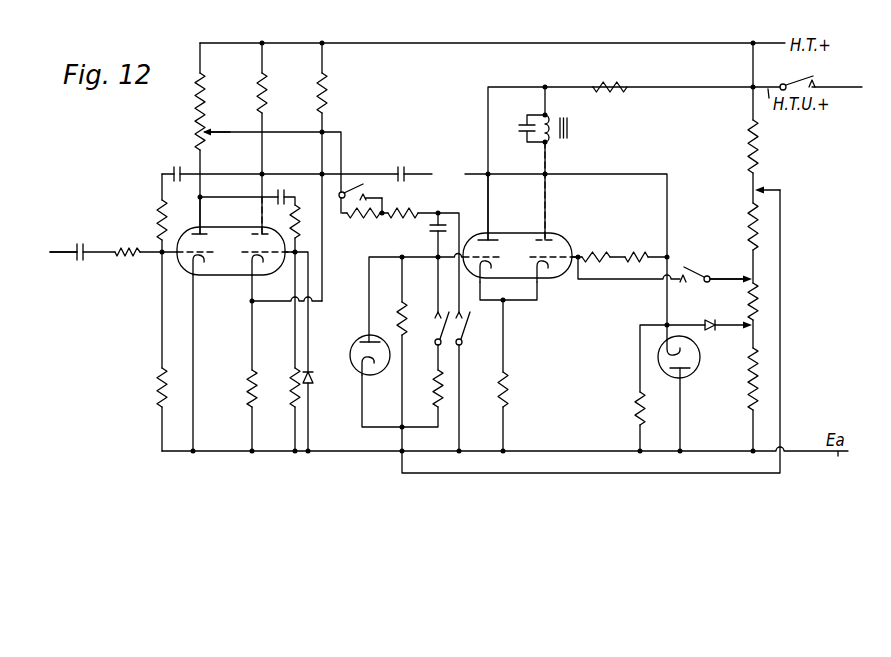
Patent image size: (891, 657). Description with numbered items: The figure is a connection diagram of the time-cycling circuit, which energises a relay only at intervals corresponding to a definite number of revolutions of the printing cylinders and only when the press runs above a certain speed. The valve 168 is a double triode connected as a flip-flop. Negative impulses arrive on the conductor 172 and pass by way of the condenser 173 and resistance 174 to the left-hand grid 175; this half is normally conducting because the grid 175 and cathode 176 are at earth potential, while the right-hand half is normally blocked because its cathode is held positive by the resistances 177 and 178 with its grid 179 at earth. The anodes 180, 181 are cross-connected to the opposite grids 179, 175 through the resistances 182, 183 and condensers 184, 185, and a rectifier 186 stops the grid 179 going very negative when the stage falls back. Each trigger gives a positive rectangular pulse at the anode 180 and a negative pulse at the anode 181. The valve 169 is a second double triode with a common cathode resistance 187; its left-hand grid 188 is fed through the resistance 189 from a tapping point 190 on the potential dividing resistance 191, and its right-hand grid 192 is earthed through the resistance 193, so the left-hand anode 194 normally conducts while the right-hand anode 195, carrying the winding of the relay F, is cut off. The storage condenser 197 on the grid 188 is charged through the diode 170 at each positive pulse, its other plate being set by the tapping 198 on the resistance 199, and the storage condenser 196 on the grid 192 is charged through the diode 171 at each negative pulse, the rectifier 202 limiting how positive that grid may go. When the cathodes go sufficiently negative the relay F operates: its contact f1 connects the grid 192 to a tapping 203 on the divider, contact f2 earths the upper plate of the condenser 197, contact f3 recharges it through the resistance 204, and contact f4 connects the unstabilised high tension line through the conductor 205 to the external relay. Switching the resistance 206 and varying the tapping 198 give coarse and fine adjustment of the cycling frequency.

The valve 168 is at (185, 268).
The valve 169 is at (574, 240).
The diode 170 is at (357, 345).
The diode 171 is at (656, 364).
The conductor 172 is at (59, 256).
The condenser 173 is at (77, 247).
The resistance 174 is at (127, 249).
The left-hand grid 175 is at (181, 256).
The cathode 176 is at (198, 268).
The resistance 177 is at (317, 88).
The resistance 178 is at (248, 392).
The grid 179 is at (283, 261).
The anode 180 is at (205, 232).
The anode 181 is at (269, 224).
The resistance 182 is at (301, 224).
The resistance 183 is at (158, 213).
The condenser 184 is at (283, 190).
The condenser 185 is at (172, 172).
The rectifier 186 is at (312, 384).
The common cathode resistance 187 is at (509, 380).
The left-hand grid 188 is at (467, 237).
The resistance 189 is at (405, 306).
The tapping point 190 is at (746, 191).
The potential dividing resistance 191 is at (759, 150).
The right-hand grid 192 is at (556, 276).
The resistance 193 is at (637, 410).
The left-hand anode 194 is at (493, 236).
The right-hand anode 195 is at (551, 232).
The storage condenser 196 is at (405, 172).
The storage condenser 197 is at (436, 222).
The tapping 198 is at (198, 136).
The resistance 199 is at (202, 121).
The rectifier 202 is at (707, 322).
The tapping 203 is at (762, 279).
The resistance 204 is at (436, 393).
The conductor 205 is at (845, 89).
The resistance 206 is at (358, 218).
The relay contact f1 is at (697, 267).
The relay contact f2 is at (470, 327).
The relay contact f3 is at (440, 327).
The relay contact f4 is at (818, 80).
The relay F is at (543, 119).